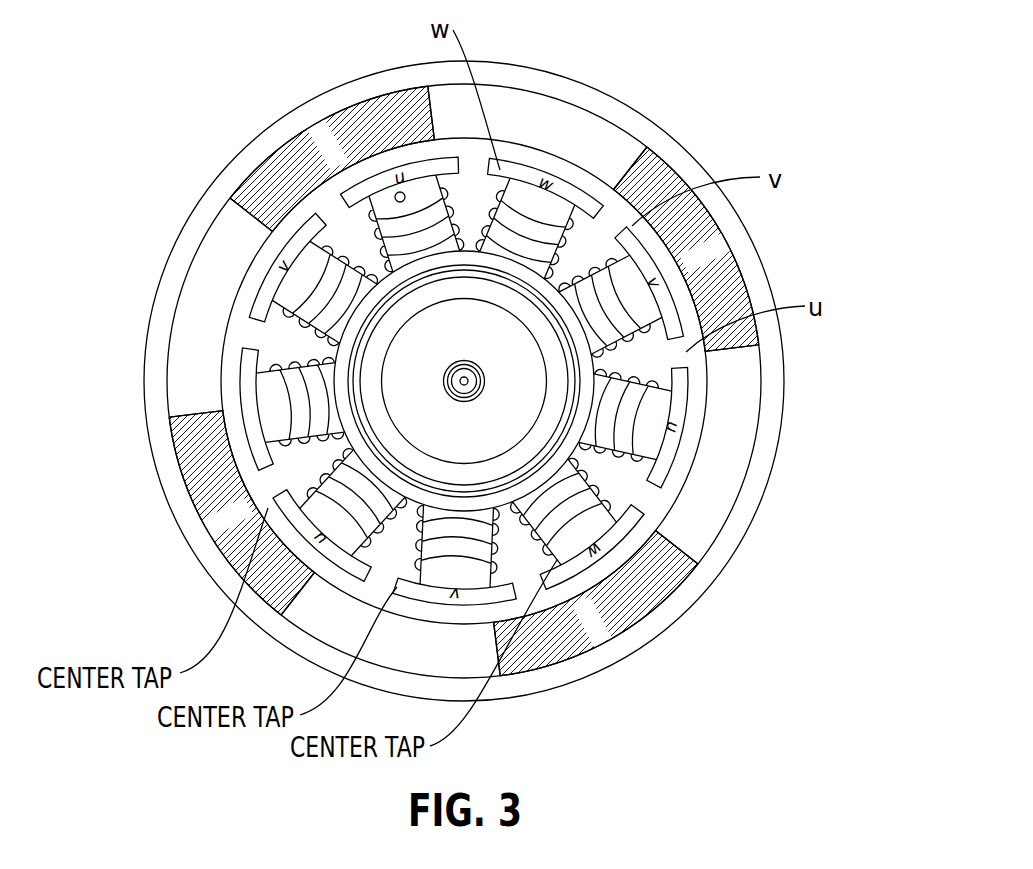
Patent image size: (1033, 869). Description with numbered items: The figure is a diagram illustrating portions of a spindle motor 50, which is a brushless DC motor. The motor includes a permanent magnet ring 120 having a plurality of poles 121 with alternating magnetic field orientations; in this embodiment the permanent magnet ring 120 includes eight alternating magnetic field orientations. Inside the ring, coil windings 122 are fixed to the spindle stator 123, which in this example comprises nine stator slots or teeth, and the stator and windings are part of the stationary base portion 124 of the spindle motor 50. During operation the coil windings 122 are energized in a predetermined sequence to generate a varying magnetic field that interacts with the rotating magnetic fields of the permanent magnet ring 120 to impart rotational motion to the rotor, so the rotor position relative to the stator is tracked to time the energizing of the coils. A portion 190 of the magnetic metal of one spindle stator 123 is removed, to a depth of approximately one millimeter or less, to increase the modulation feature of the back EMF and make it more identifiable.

The spindle motor 50 is at (183, 598).
The permanent magnet ring 120 is at (602, 138).
The poles 121 is at (222, 250).
The coil windings 122 is at (270, 437).
The spindle stator 123 is at (272, 390).
The stationary base portion 124 is at (486, 445).
The portion 190 is at (400, 191).